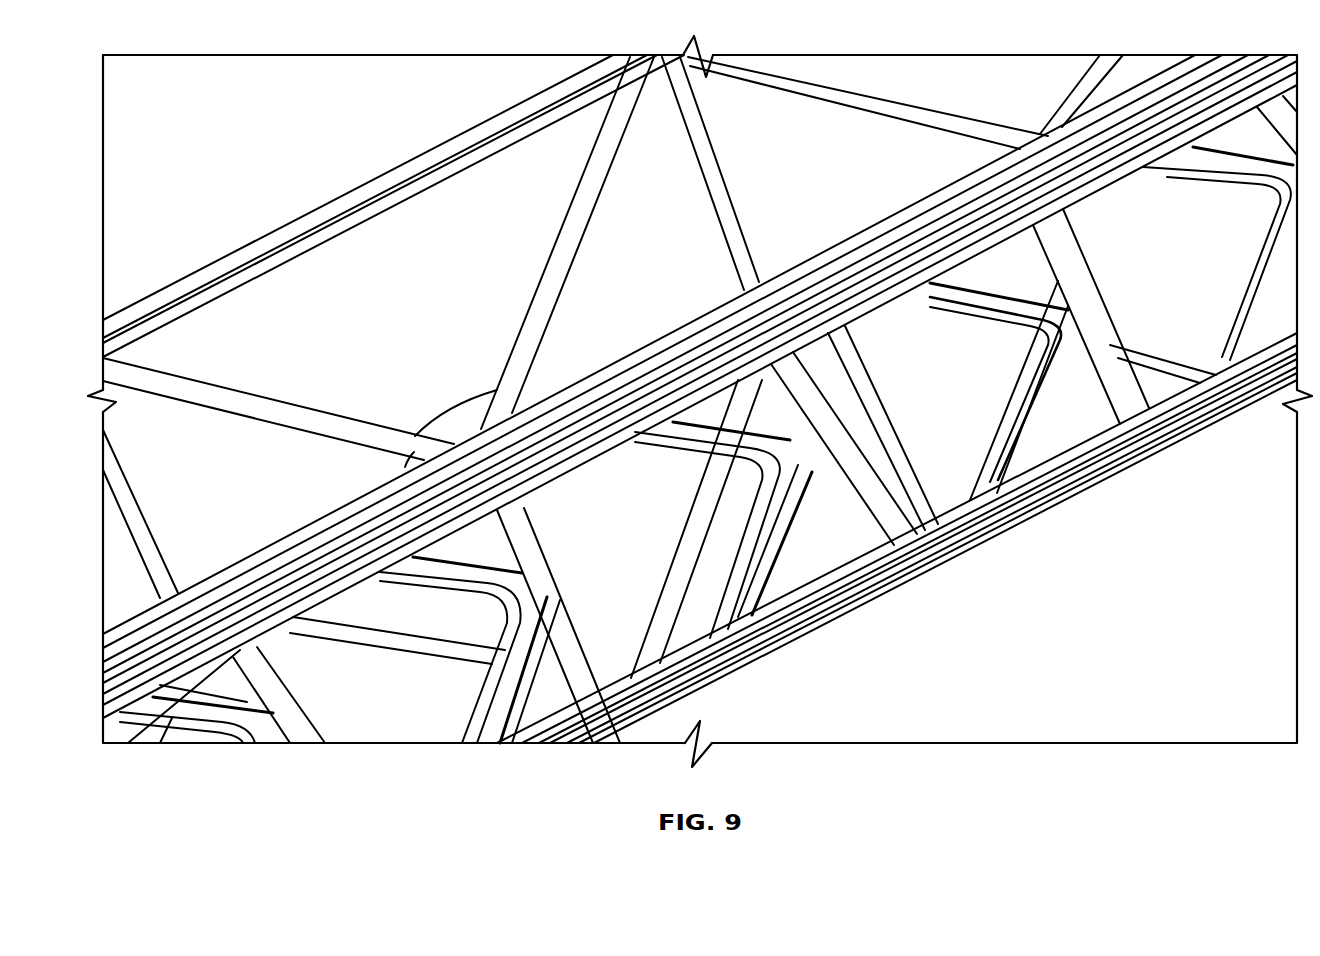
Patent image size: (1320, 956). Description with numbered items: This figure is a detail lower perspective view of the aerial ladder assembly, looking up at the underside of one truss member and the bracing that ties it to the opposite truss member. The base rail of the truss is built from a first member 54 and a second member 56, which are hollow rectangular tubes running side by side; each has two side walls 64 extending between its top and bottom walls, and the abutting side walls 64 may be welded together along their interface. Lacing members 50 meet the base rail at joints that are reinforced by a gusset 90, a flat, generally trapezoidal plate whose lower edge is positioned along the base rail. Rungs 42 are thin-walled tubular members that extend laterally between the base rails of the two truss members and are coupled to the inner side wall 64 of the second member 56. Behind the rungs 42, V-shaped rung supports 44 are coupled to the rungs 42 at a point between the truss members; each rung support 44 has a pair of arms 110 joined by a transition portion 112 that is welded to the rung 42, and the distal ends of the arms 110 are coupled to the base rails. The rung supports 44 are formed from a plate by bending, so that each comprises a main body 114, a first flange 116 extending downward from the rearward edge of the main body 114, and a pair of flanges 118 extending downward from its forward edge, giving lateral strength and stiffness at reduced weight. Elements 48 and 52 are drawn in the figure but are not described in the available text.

The rung 42 is at (777, 391).
The rung support 44 is at (816, 554).
The top chord 48 is at (388, 205).
The lacing member 50 is at (227, 383).
The web strut 52 is at (713, 207).
The first member 54 is at (957, 557).
The second member 56 is at (685, 677).
The side wall 64 is at (733, 673).
The gusset 90 is at (467, 432).
The arm 110 is at (448, 590).
The transition portion 112 is at (767, 470).
The main body 114 is at (1030, 380).
The first flange 116 is at (990, 450).
The flange 118 is at (913, 253).